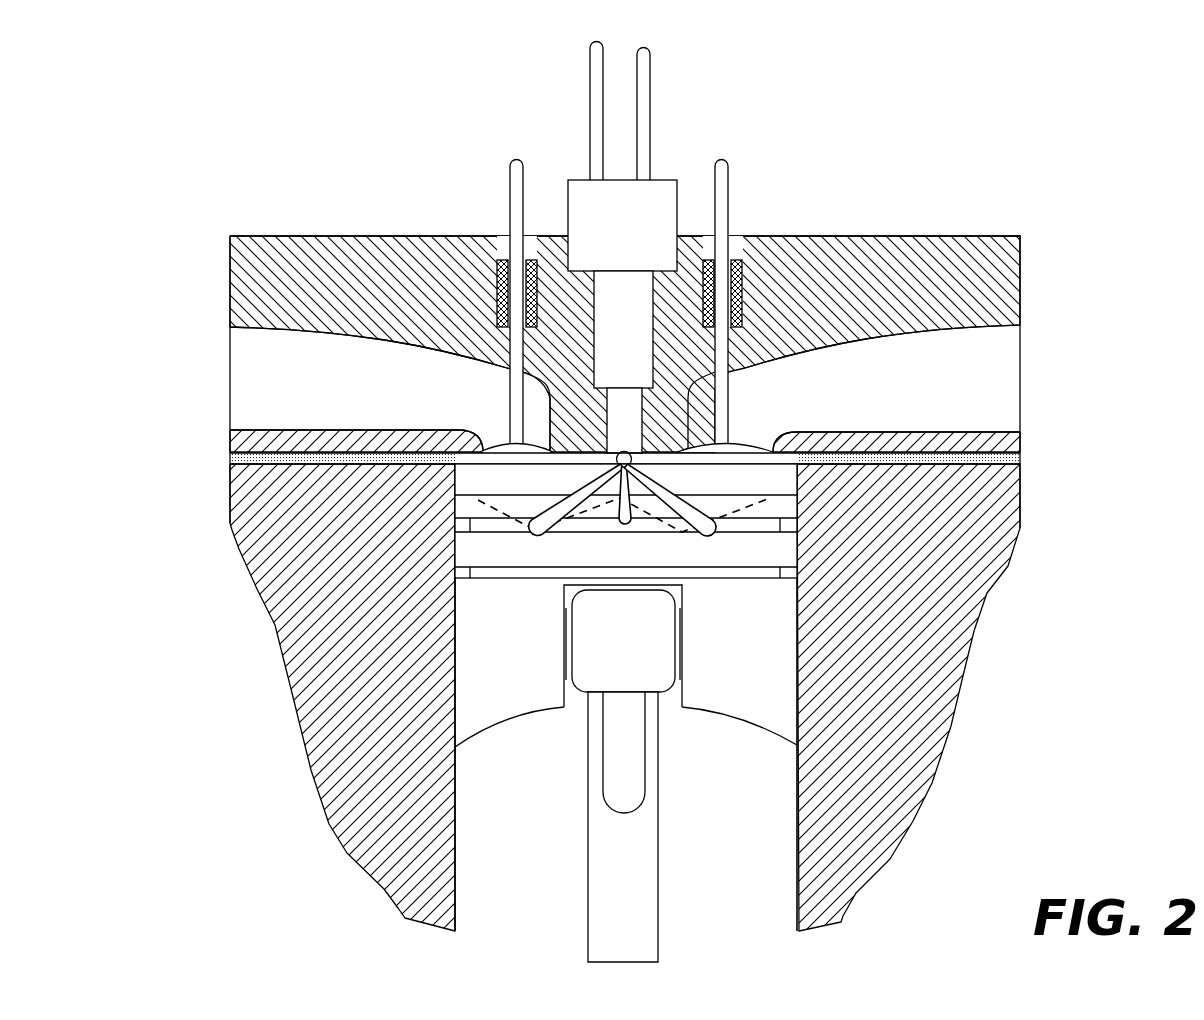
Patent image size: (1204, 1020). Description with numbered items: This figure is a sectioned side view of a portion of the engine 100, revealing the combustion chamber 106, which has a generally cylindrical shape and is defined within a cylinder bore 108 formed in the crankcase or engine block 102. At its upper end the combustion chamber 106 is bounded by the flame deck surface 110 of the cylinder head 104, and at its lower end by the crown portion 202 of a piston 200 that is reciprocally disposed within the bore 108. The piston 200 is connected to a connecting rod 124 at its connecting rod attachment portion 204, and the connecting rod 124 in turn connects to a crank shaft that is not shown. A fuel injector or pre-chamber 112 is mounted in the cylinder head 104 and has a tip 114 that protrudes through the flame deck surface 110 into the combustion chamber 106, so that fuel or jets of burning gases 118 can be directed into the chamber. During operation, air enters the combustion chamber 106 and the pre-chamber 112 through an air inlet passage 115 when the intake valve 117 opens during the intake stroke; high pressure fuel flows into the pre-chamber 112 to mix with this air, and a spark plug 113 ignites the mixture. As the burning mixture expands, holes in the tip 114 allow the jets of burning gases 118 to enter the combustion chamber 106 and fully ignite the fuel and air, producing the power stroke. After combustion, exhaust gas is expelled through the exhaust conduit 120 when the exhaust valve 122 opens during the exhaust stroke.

The engine 100 is at (993, 202).
The engine block 102 is at (949, 667).
The cylinder head 104 is at (1005, 279).
The combustion chamber 106 is at (470, 631).
The cylinder bore 108 is at (797, 886).
The flame deck surface 110 is at (790, 457).
The pre-chamber 112 is at (663, 188).
The spark plug 113 is at (643, 367).
The tip 114 is at (619, 452).
The air inlet passage 115 is at (253, 388).
The intake valve 117 is at (505, 450).
The jets of burning gases 118 is at (692, 512).
The exhaust conduit 120 is at (1005, 367).
The exhaust valve 122 is at (725, 447).
The connecting rod 124 is at (640, 855).
The piston 200 is at (757, 659).
The crown portion 202 is at (470, 500).
The connecting rod attachment portion 204 is at (520, 693).